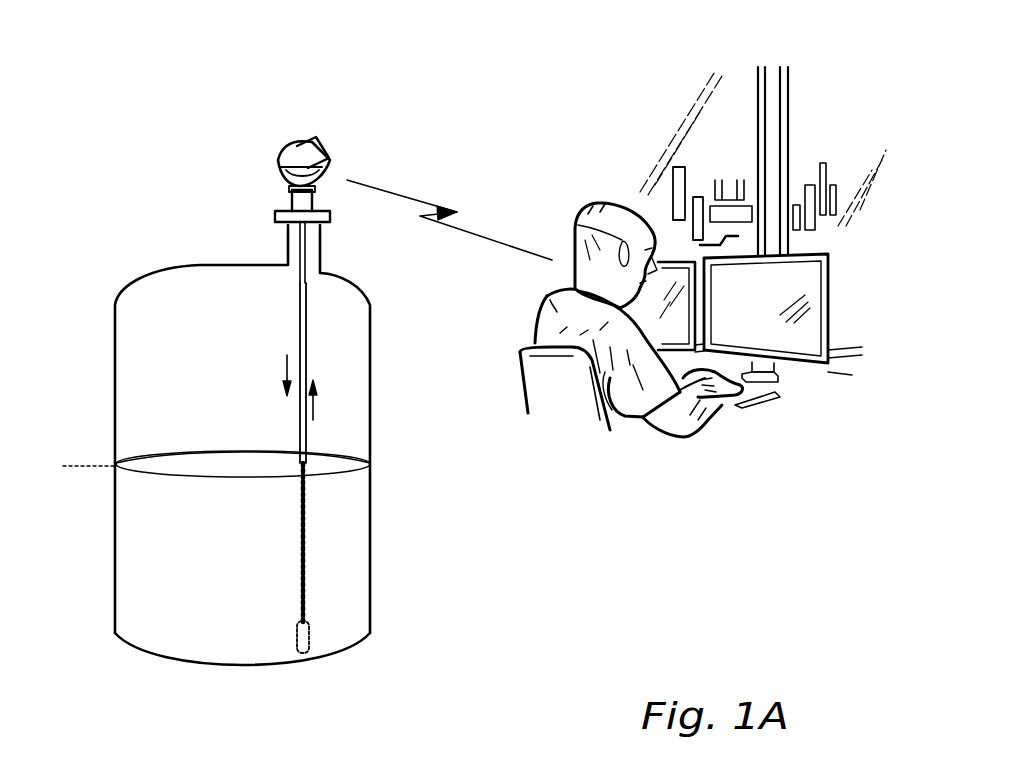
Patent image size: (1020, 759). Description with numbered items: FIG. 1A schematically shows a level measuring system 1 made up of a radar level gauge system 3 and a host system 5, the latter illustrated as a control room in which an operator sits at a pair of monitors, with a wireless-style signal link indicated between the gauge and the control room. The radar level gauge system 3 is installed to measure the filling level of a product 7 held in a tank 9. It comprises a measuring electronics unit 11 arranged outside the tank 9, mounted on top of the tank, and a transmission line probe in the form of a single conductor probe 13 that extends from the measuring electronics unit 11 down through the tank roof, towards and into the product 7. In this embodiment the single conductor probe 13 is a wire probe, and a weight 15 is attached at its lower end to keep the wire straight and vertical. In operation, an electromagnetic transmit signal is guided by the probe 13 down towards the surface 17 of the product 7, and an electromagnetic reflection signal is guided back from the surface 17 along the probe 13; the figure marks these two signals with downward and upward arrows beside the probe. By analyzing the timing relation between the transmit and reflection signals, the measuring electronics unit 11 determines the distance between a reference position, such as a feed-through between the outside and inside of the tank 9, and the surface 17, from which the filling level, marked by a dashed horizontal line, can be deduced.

The level measuring system 1 is at (565, 0).
The radar level gauge system 3 is at (260, 139).
The host system 5 is at (815, 126).
The product 7 is at (220, 578).
The tank 9 is at (116, 404).
The measuring electronics unit 11 is at (300, 149).
The single conductor probe 13 is at (307, 360).
The weight 15 is at (308, 637).
The surface 17 is at (205, 468).